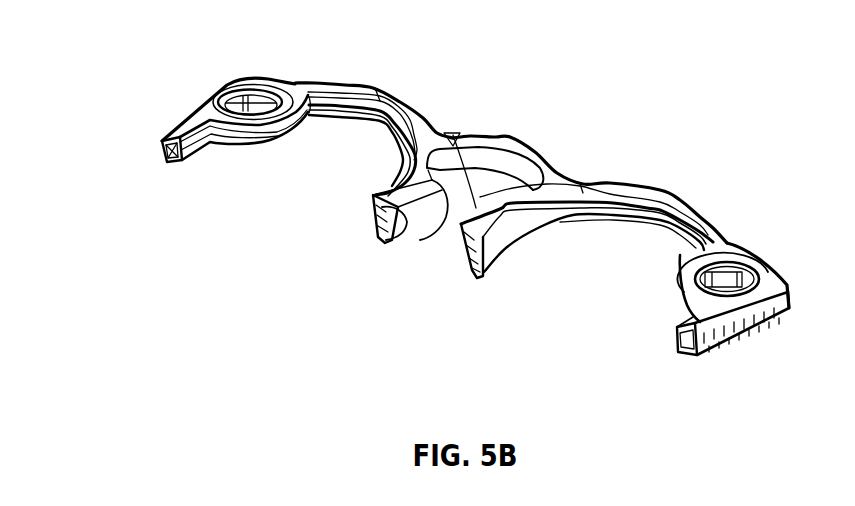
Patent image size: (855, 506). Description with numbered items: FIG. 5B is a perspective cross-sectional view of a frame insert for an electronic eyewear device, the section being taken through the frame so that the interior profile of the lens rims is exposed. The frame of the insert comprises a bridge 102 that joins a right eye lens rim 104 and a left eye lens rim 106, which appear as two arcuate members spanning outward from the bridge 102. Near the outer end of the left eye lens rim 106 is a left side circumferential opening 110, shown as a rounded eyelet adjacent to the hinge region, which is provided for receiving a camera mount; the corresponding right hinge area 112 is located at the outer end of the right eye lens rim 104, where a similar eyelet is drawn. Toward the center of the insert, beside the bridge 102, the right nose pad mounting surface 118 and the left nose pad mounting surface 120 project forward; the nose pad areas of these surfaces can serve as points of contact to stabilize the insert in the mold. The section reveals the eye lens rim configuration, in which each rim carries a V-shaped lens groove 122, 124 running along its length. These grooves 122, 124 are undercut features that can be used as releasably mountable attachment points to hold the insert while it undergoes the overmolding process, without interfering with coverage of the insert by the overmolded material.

The bridge 102 is at (524, 136).
The right eye lens rim 104 is at (392, 92).
The left eye lens rim 106 is at (705, 211).
The left side circumferential opening 110 is at (760, 268).
The right hinge area 112 is at (258, 100).
The right nose pad mounting surface 118 is at (445, 200).
The left nose pad mounting surface 120 is at (448, 170).
The V-shaped lens groove 122 is at (167, 163).
The V-shaped lens groove 124 is at (677, 341).